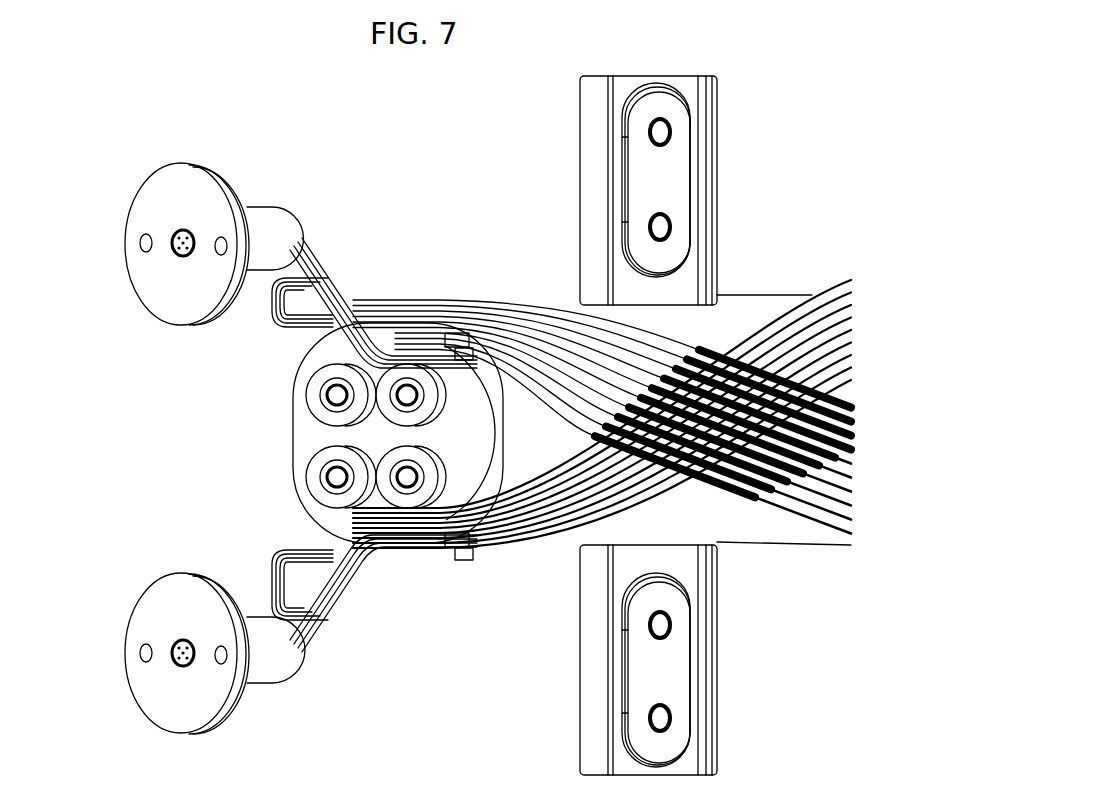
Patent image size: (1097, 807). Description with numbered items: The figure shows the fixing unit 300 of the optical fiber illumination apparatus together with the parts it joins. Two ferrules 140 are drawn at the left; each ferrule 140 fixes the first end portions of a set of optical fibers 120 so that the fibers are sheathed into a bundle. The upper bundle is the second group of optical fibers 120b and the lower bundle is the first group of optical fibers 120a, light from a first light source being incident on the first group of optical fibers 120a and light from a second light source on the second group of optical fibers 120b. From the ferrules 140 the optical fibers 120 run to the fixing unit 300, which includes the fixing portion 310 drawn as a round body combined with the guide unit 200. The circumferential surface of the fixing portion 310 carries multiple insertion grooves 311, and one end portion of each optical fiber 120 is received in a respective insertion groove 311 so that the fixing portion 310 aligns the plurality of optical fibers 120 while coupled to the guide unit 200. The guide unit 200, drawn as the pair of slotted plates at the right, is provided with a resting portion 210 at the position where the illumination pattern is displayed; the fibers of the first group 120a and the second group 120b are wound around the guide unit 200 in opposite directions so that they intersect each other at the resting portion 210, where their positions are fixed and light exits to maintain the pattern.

The ferrule 140 is at (158, 196).
The optical fibers 120 is at (561, 458).
The first group of optical fibers 120a is at (330, 600).
The second group of optical fibers 120b is at (330, 273).
The guide unit 200 is at (777, 282).
The resting portion 210 is at (722, 518).
The fixing unit 300 is at (272, 397).
The fixing portion 310 is at (477, 440).
The insertion groove 311 is at (468, 563).